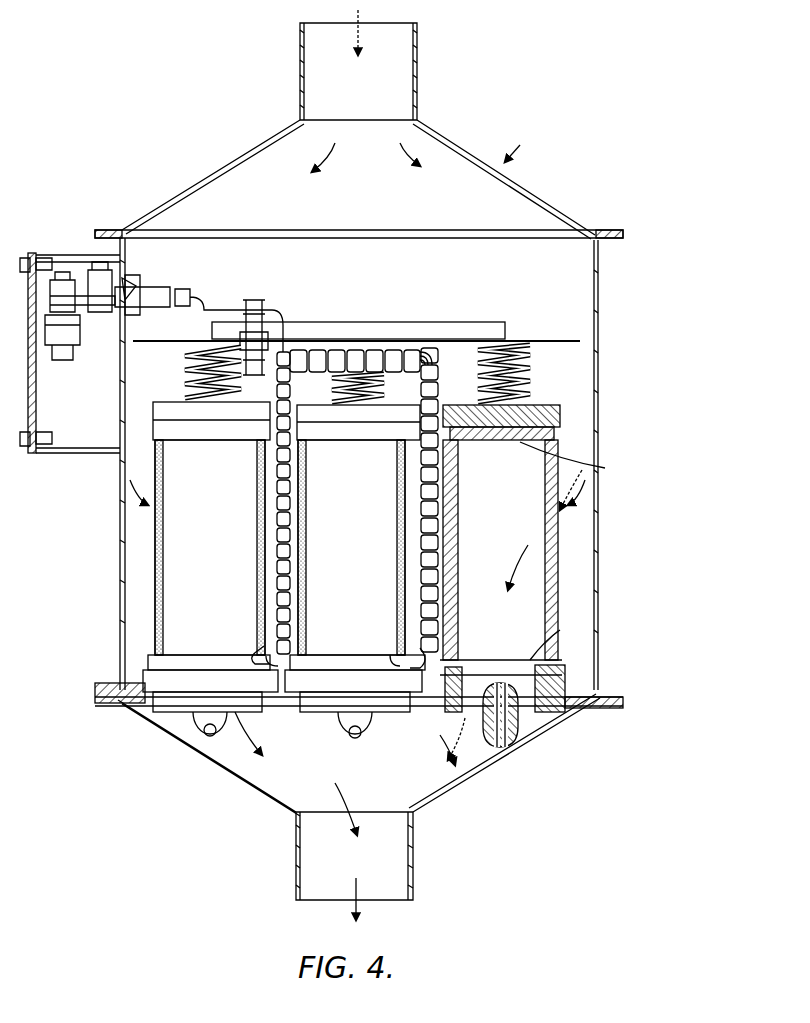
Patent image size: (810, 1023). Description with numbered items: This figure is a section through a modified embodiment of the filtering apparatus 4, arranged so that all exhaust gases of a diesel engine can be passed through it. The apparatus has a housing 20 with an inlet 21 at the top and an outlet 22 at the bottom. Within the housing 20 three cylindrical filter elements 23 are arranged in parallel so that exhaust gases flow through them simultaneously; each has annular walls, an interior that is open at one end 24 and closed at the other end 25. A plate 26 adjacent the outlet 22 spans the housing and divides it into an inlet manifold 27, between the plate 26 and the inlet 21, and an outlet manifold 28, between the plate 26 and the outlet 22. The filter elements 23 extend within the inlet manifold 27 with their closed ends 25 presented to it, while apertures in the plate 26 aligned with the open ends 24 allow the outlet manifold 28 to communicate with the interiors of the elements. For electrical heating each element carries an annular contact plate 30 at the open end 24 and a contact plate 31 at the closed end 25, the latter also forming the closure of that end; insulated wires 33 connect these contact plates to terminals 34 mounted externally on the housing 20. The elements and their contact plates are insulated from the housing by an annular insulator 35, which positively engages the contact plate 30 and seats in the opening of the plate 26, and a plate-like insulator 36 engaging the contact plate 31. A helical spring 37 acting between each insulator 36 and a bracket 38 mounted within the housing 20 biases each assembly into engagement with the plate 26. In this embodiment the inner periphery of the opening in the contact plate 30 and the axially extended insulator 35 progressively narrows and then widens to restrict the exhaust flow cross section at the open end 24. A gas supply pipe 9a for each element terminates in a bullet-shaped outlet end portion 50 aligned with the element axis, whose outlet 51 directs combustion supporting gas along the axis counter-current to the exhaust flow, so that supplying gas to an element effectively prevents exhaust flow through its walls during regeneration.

The filtering apparatus 4 is at (520, 141).
The housing 20 is at (540, 195).
The inlet 21 is at (410, 76).
The outlet 22 is at (413, 845).
The filter elements 23 is at (165, 522).
The open end 24 is at (560, 630).
The closed end 25 is at (577, 461).
The plate 26 is at (112, 705).
The inlet manifold 27 is at (367, 201).
The outlet manifold 28 is at (268, 790).
The contact plate 30 is at (160, 662).
The contact plate 31 is at (160, 432).
The insulated wires 33 is at (200, 312).
The terminals 34 is at (78, 340).
The insulator 35 is at (195, 670).
The insulator 36 is at (160, 412).
The helical spring 37 is at (200, 378).
The bracket 38 is at (524, 300).
The outlet end portion 50 is at (215, 742).
The outlet 51 is at (502, 683).
The supply pipes 9a is at (205, 735).